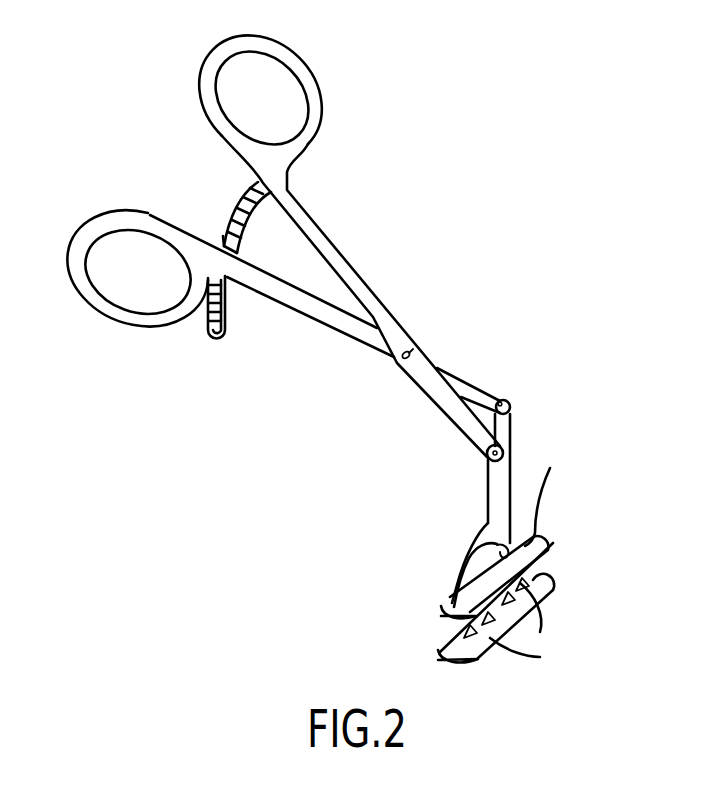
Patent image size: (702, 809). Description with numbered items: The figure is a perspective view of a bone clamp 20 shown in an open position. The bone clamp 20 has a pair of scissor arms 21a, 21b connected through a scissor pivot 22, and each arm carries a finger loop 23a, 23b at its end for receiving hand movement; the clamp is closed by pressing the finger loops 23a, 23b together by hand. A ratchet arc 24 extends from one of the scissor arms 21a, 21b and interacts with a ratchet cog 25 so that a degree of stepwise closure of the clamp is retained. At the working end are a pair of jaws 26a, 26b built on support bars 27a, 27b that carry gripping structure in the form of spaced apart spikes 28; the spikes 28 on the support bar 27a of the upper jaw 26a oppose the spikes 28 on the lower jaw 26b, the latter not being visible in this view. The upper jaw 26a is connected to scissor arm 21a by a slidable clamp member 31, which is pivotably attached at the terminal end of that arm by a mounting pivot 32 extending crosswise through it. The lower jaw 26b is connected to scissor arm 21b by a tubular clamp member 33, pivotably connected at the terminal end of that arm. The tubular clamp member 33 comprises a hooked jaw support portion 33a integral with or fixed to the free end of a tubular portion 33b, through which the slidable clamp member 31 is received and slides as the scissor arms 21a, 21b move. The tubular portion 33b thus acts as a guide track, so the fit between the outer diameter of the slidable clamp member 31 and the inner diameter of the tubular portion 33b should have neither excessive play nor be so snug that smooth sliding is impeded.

The bone clamp 20 is at (458, 190).
The scissor arm 21a is at (293, 307).
The scissor arm 21b is at (317, 233).
The scissor pivot 22 is at (412, 348).
The finger loop 23a is at (82, 300).
The finger loop 23b is at (308, 63).
The ratchet arc 24 is at (212, 330).
The ratchet cog 25 is at (224, 240).
The upper jaw 26a is at (445, 610).
The lower jaw 26b is at (445, 660).
The support bar 27a is at (485, 578).
The support bar 27b is at (503, 635).
The spikes 28 is at (537, 642).
The slidable clamp member 31 is at (500, 428).
The mounting pivot 32 is at (508, 406).
The tubular clamp member 33 is at (419, 552).
The hooked jaw support portion 33a is at (458, 566).
The tubular portion 33b is at (488, 497).